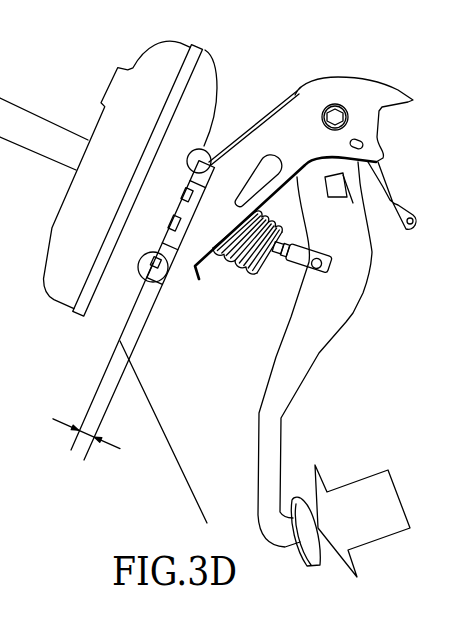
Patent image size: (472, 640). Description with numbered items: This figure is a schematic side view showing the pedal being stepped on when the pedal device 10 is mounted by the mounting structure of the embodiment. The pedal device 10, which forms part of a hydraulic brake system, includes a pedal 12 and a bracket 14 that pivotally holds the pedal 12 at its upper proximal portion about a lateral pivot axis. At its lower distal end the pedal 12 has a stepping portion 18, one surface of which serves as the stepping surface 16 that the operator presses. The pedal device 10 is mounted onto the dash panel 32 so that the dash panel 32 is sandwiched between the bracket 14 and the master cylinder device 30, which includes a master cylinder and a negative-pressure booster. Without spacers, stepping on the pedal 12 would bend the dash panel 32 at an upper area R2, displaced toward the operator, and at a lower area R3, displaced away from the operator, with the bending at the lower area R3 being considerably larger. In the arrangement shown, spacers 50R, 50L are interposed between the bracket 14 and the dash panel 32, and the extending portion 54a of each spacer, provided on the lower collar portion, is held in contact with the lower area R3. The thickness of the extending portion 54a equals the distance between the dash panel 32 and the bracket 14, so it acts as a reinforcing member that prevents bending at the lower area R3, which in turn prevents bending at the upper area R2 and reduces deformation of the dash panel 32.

The pedal device 10 is at (404, 51).
The pedal 12 is at (322, 333).
The bracket 14 is at (306, 113).
The stepping surface 16 is at (321, 560).
The stepping portion 18 is at (312, 568).
The master cylinder device 30 is at (69, 27).
The dash panel 32 is at (170, 447).
The spacer 50L is at (191, 271).
The spacer 50R is at (201, 233).
The extending portion 54a is at (165, 287).
The upper area R2 is at (206, 155).
The lower area R3 is at (140, 270).